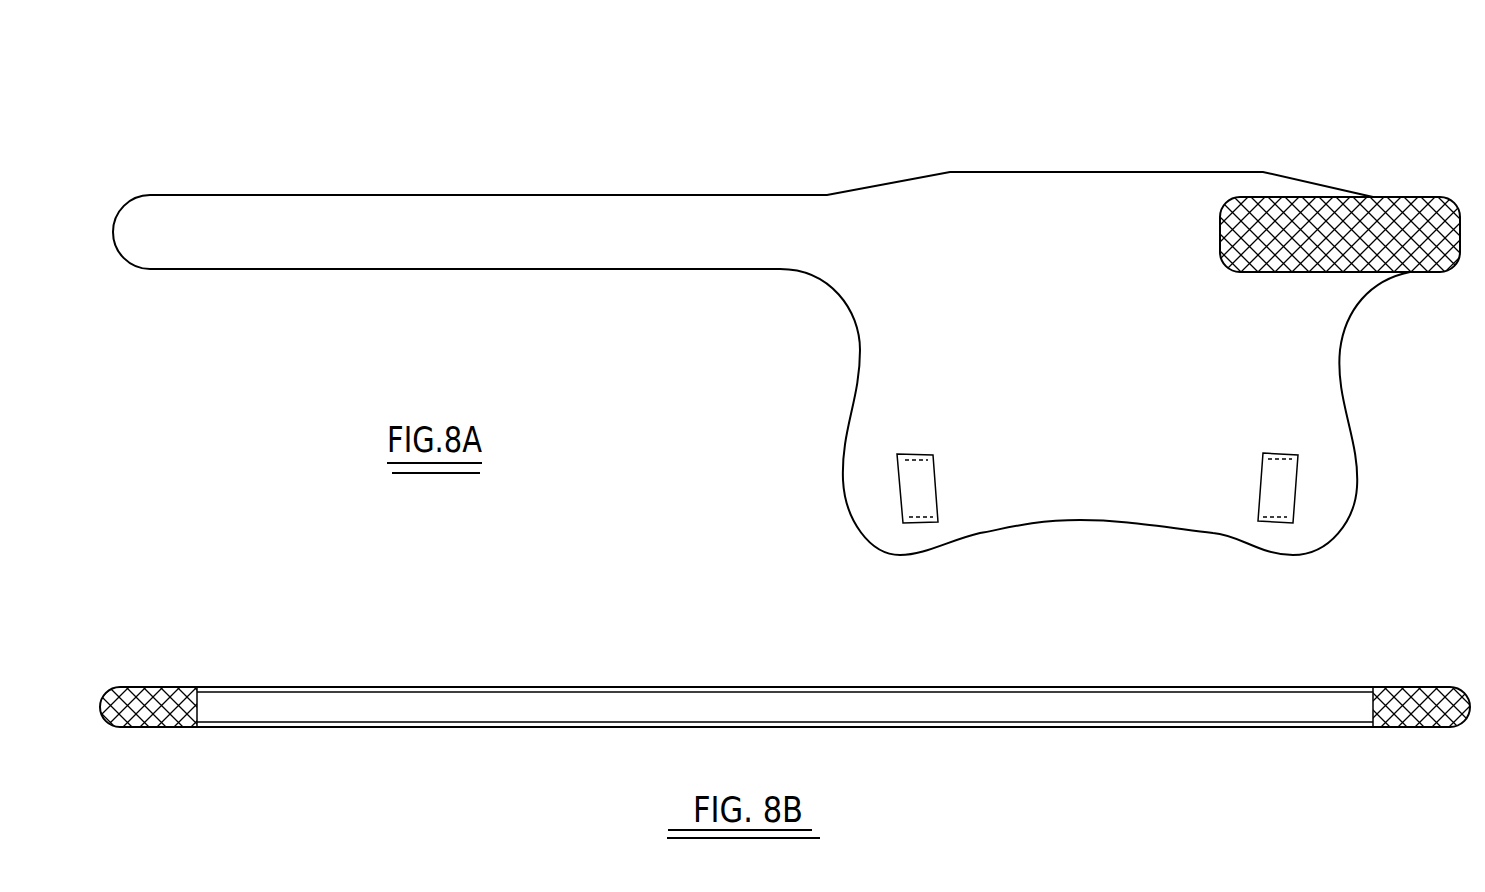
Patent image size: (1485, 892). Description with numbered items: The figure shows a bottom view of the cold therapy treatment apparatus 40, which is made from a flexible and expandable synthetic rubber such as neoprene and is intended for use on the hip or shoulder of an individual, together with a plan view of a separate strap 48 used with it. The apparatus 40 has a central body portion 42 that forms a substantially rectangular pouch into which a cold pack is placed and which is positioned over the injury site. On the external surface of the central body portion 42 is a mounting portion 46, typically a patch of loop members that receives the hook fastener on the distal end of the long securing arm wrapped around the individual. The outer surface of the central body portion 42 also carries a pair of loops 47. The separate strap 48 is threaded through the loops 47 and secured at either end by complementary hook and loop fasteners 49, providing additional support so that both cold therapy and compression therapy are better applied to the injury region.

In FIG. 8A, the cold therapy treatment apparatus 40 is at (624, 163).
In FIG. 8A, the central body portion 42 is at (1093, 337).
In FIG. 8A, the mounting portion 46 is at (1240, 197).
In FIG. 8A, the loops 47 is at (910, 487).
In FIG. 8B, the separate strap 48 is at (550, 705).
In FIG. 8B, the hook and loop fasteners 49 is at (140, 687).